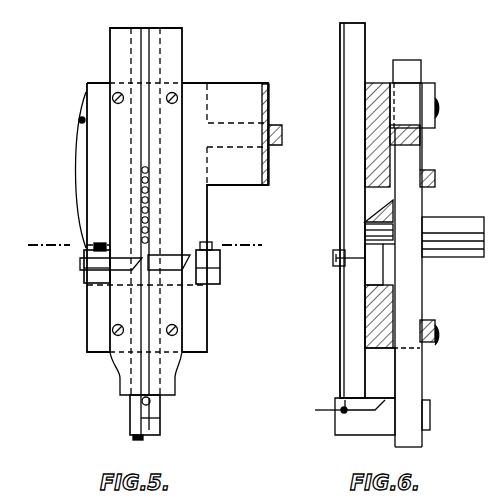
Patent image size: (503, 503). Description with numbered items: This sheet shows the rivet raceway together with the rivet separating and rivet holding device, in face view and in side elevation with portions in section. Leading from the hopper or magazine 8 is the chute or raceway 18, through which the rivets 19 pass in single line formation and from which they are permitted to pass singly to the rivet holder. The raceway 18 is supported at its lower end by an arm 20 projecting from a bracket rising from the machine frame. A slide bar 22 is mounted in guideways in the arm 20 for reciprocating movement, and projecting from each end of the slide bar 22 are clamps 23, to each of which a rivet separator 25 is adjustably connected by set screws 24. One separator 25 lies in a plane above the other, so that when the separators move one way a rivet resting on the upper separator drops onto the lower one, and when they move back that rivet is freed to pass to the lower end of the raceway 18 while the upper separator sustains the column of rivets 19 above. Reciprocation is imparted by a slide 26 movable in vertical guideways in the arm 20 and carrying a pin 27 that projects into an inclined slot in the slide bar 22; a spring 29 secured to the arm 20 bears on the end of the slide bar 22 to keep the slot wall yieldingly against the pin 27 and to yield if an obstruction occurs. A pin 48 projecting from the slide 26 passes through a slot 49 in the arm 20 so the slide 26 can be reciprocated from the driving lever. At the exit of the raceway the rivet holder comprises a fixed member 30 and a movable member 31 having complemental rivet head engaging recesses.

In FIG. 5, the chute or raceway 18 is at (146, 28).
In FIG. 6, the chute or raceway 18 is at (352, 150).
In FIG. 5, the rivets 19 is at (144, 168).
In FIG. 5, the arm 20 is at (207, 195).
In FIG. 6, the slide bar 22 is at (375, 270).
In FIG. 5, the clamps 23 is at (86, 265).
In FIG. 5, the set screws 24 is at (94, 245).
In FIG. 5, the rivet separator 25 is at (130, 258).
In FIG. 6, the rivet separator 25 is at (333, 260).
In FIG. 6, the slide 26 is at (405, 75).
In FIG. 6, the pin 27 is at (365, 224).
In FIG. 5, the spring 29 is at (78, 178).
In FIG. 5, the fixed member 30 is at (130, 418).
In FIG. 5, the movable member 31 is at (152, 400).
In FIG. 6, the movable member 31 is at (355, 428).
In FIG. 6, the pin 48 is at (455, 225).
In FIG. 6, the slot 49 is at (428, 298).
In FIG. 5, the hopper or magazine 8 is at (151, 239).